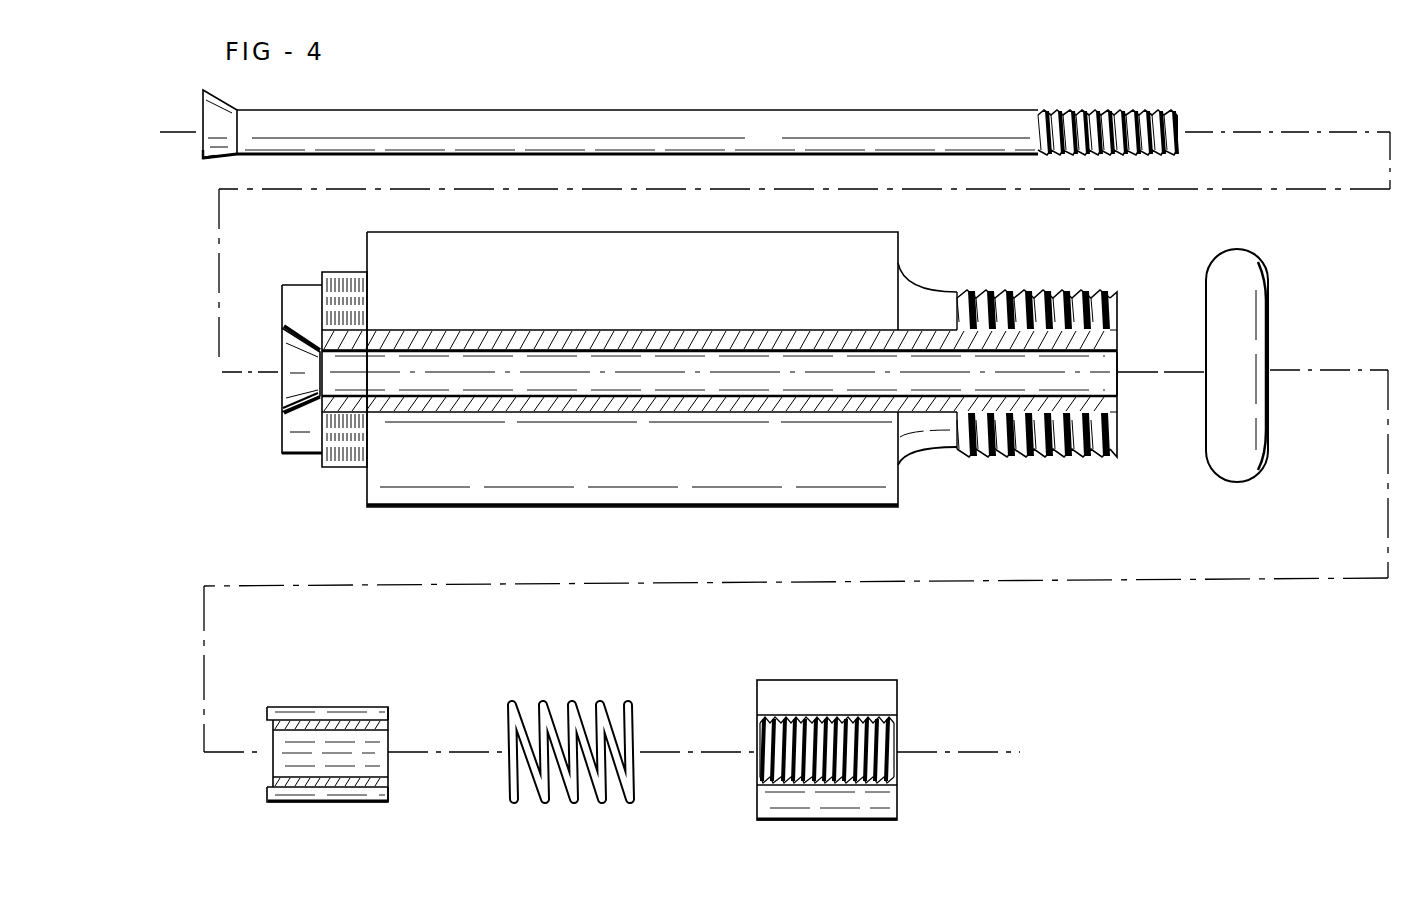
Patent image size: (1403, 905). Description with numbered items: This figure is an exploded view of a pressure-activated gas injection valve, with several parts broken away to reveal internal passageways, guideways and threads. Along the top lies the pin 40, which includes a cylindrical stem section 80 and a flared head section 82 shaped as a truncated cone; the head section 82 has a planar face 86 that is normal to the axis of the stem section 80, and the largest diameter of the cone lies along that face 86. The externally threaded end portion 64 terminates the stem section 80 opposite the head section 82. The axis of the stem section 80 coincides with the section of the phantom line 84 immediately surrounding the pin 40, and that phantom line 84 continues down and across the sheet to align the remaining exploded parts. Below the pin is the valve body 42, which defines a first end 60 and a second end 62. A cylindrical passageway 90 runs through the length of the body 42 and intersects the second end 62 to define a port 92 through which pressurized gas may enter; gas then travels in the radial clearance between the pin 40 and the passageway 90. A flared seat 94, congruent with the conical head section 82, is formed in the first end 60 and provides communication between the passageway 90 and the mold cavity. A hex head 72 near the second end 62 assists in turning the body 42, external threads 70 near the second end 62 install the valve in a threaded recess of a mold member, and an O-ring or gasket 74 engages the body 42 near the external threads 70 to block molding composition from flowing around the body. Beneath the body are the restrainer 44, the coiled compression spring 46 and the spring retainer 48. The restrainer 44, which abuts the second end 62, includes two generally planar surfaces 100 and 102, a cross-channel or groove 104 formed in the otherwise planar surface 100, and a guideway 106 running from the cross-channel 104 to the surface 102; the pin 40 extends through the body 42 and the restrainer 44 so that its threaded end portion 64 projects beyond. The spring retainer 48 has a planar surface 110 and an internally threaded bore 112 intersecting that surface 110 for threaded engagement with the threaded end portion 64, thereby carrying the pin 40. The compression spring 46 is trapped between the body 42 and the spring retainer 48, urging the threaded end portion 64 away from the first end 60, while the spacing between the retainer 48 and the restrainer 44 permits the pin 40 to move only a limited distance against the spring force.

The pin 40 is at (764, 137).
The cylindrical stem section 80 is at (609, 120).
The flared head section 82 is at (232, 112).
The planar face 86 is at (203, 157).
The externally threaded end portion 64 is at (1093, 115).
The phantom line 84 is at (1277, 128).
The valve body 42 is at (874, 465).
The first end 60 is at (286, 313).
The flared seat 94 is at (288, 406).
The hex head 72 is at (347, 288).
The external threads 70 is at (1012, 298).
The second end 62 is at (1118, 322).
The port 92 is at (1093, 390).
The cylindrical passageway 90 is at (703, 386).
The O-ring or gasket 74 is at (1251, 361).
The restrainer 44 is at (371, 754).
The planar surface 100 is at (268, 722).
The planar surface 102 is at (390, 730).
The guideway 106 is at (340, 728).
The cross-channel or groove 104 is at (268, 767).
The coiled compression spring 46 is at (576, 705).
The spring retainer 48 is at (897, 716).
The planar surface 110 is at (757, 700).
The internally threaded bore 112 is at (834, 730).